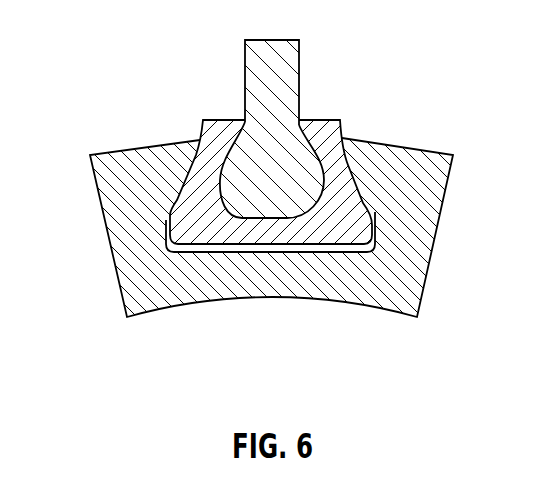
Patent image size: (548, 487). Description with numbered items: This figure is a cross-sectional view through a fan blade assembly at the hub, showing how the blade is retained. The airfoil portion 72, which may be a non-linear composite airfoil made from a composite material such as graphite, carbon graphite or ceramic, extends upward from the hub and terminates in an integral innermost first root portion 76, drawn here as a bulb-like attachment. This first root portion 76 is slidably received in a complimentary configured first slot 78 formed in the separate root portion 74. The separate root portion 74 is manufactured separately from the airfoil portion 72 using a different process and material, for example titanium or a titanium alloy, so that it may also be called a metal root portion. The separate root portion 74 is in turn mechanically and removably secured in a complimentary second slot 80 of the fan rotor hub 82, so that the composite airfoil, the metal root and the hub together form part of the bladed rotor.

The airfoil portion 72 is at (285, 68).
The separate root portion 74 is at (350, 158).
The first root portion 76 is at (288, 162).
The first slot 78 is at (221, 196).
The second slot 80 is at (377, 237).
The fan rotor hub 82 is at (135, 167).